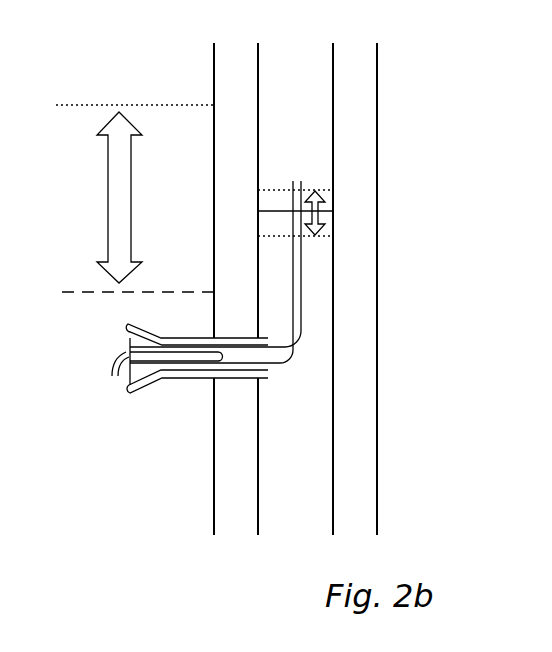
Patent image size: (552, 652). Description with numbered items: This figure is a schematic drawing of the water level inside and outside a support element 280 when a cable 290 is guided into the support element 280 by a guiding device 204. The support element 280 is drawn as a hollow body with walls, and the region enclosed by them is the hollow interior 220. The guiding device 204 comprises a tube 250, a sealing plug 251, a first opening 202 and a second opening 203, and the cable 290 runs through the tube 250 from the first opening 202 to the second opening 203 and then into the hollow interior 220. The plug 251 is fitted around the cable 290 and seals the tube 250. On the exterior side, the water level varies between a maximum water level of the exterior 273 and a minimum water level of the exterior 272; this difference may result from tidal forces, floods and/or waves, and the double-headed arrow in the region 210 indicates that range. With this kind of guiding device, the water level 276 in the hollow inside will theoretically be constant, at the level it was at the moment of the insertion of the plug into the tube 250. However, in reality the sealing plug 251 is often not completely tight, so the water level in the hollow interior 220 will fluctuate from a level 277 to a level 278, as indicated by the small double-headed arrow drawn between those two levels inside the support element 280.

The support element 280 is at (215, 92).
The maximum water level of the exterior 273 is at (153, 103).
The first region / movement direction 210 is at (83, 144).
The minimum water level of the exterior 272 is at (108, 292).
The first opening 202 is at (118, 334).
The sealing plug 251 is at (133, 345).
The tube 250 is at (160, 378).
The guiding device 204 is at (208, 409).
The second opening 203 is at (310, 397).
The hollow interior 220 is at (310, 454).
The level 278 is at (315, 190).
The water level 276 is at (329, 210).
The level 277 is at (329, 235).
The cable 290 is at (303, 323).